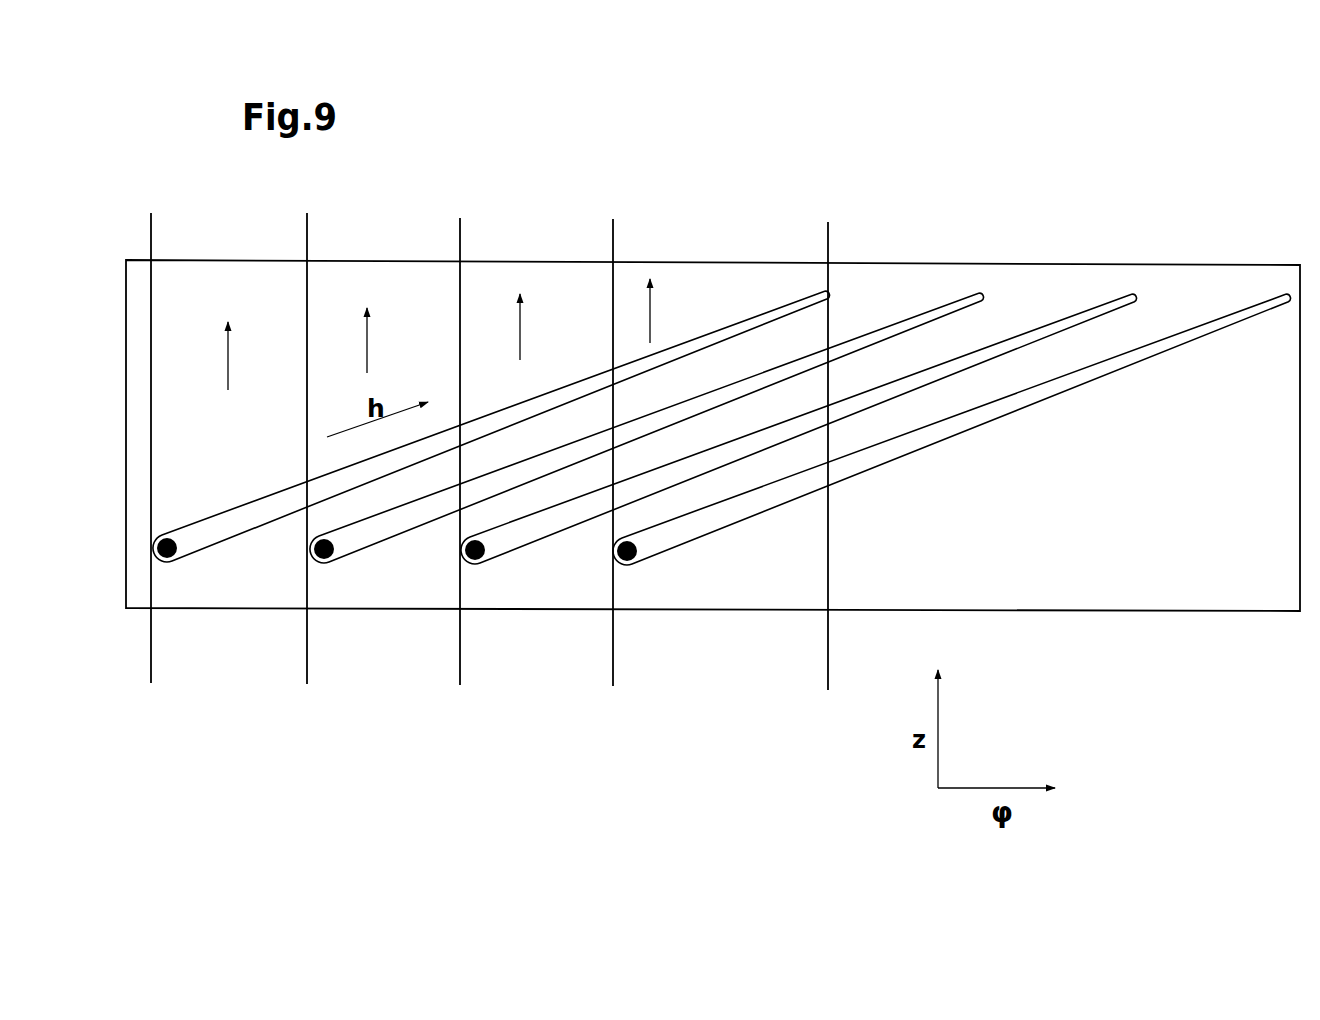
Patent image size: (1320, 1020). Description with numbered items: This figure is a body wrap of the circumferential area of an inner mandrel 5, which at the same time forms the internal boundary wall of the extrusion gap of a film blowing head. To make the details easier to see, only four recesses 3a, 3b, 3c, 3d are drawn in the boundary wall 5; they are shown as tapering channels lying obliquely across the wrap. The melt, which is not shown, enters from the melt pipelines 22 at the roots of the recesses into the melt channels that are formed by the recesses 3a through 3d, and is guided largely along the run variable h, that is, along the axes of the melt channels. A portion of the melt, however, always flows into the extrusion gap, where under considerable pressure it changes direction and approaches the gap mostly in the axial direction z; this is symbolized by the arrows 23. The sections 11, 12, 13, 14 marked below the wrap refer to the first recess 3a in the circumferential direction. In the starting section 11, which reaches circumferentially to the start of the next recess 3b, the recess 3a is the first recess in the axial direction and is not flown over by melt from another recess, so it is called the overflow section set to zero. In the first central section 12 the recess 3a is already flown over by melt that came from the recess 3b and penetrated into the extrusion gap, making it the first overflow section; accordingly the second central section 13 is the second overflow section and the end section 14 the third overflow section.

The first recess 3a is at (566, 400).
The second recess 3b is at (856, 342).
The third recess 3c is at (1013, 342).
The fourth recess 3d is at (1128, 357).
The inner mandrel 5 is at (1125, 470).
The starting section 11 is at (305, 665).
The first central section 12 is at (309, 665).
The second central section 13 is at (611, 665).
The end section 14 is at (826, 665).
The melt pipelines 22 is at (175, 557).
The arrows 23 is at (443, 334).